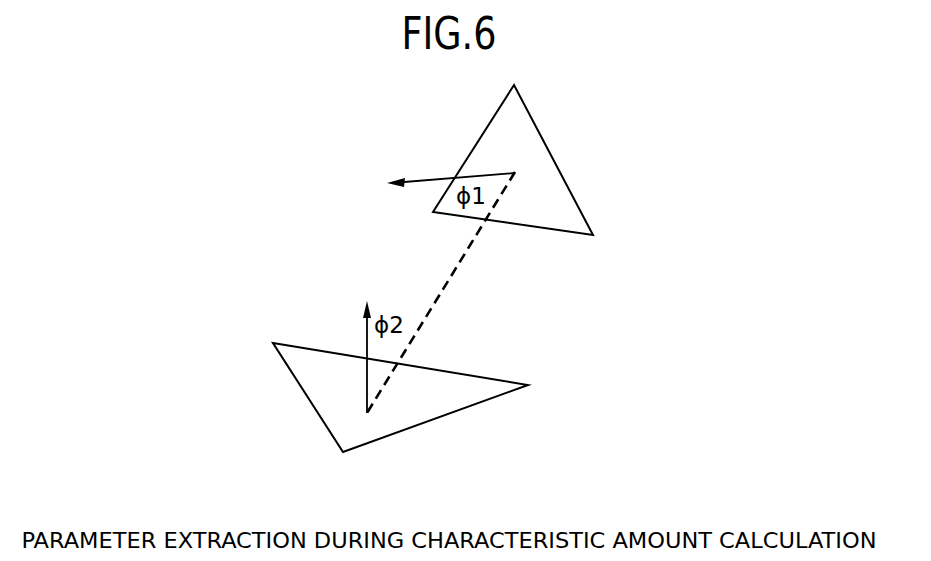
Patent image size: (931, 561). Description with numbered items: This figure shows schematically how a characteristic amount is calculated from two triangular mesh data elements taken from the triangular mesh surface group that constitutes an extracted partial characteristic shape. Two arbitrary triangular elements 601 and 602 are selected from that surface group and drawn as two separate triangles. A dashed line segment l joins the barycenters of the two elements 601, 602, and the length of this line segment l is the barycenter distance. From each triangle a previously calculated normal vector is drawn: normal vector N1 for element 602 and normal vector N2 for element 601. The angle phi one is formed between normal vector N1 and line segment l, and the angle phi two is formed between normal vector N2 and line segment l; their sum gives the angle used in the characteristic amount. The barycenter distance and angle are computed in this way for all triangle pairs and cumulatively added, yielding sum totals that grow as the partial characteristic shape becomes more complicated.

The element 601 is at (417, 410).
The element 602 is at (533, 147).
The normal vector N1 is at (451, 169).
The normal vector N2 is at (367, 340).
The line segment l is at (441, 292).